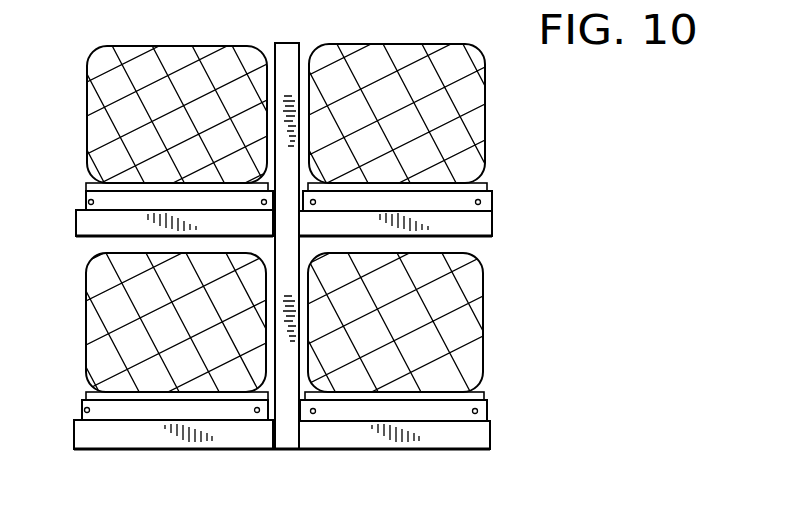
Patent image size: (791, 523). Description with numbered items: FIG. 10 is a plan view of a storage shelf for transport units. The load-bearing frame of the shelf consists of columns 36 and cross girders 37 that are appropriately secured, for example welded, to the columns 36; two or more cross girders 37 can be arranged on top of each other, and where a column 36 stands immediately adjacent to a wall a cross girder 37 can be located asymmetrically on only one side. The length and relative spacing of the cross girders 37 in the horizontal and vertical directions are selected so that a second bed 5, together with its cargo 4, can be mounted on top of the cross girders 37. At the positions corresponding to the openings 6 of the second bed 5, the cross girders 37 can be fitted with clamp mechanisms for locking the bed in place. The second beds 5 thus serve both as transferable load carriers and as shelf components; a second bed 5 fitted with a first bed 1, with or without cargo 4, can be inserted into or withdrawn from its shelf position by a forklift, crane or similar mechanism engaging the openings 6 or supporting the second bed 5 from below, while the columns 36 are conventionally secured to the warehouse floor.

The first bed 1 is at (85, 183).
The cargo 4 is at (135, 57).
The second bed 5 is at (118, 200).
The opening 6 is at (90, 202).
The column 36 is at (290, 50).
The cross girder 37 is at (480, 220).